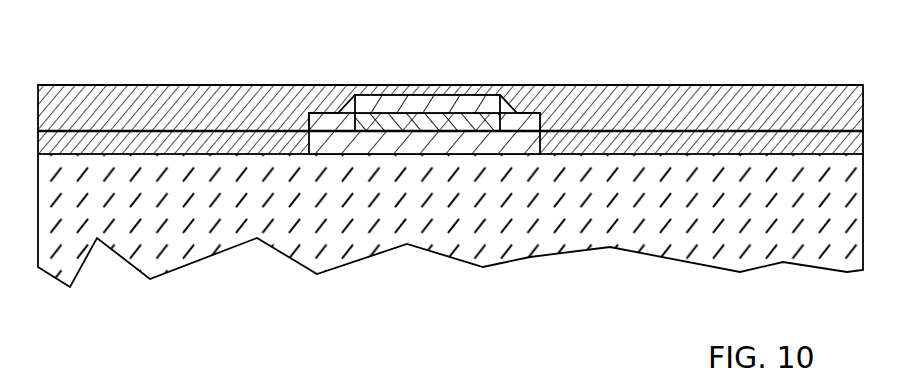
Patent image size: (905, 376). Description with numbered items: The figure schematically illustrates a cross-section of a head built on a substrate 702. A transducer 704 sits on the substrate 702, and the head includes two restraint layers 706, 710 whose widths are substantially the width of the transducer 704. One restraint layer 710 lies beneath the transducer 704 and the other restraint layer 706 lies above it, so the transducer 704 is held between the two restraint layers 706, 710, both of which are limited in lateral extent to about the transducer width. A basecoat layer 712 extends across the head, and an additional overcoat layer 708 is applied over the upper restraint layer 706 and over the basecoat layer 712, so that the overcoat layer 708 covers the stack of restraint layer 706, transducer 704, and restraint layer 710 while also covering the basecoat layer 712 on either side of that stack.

The substrate 702 is at (233, 247).
The transducer 704 is at (427, 120).
The restraint layer 706 is at (470, 96).
The overcoat layer 708 is at (234, 90).
The restraint layer 710 is at (500, 148).
The basecoat layer 712 is at (620, 143).